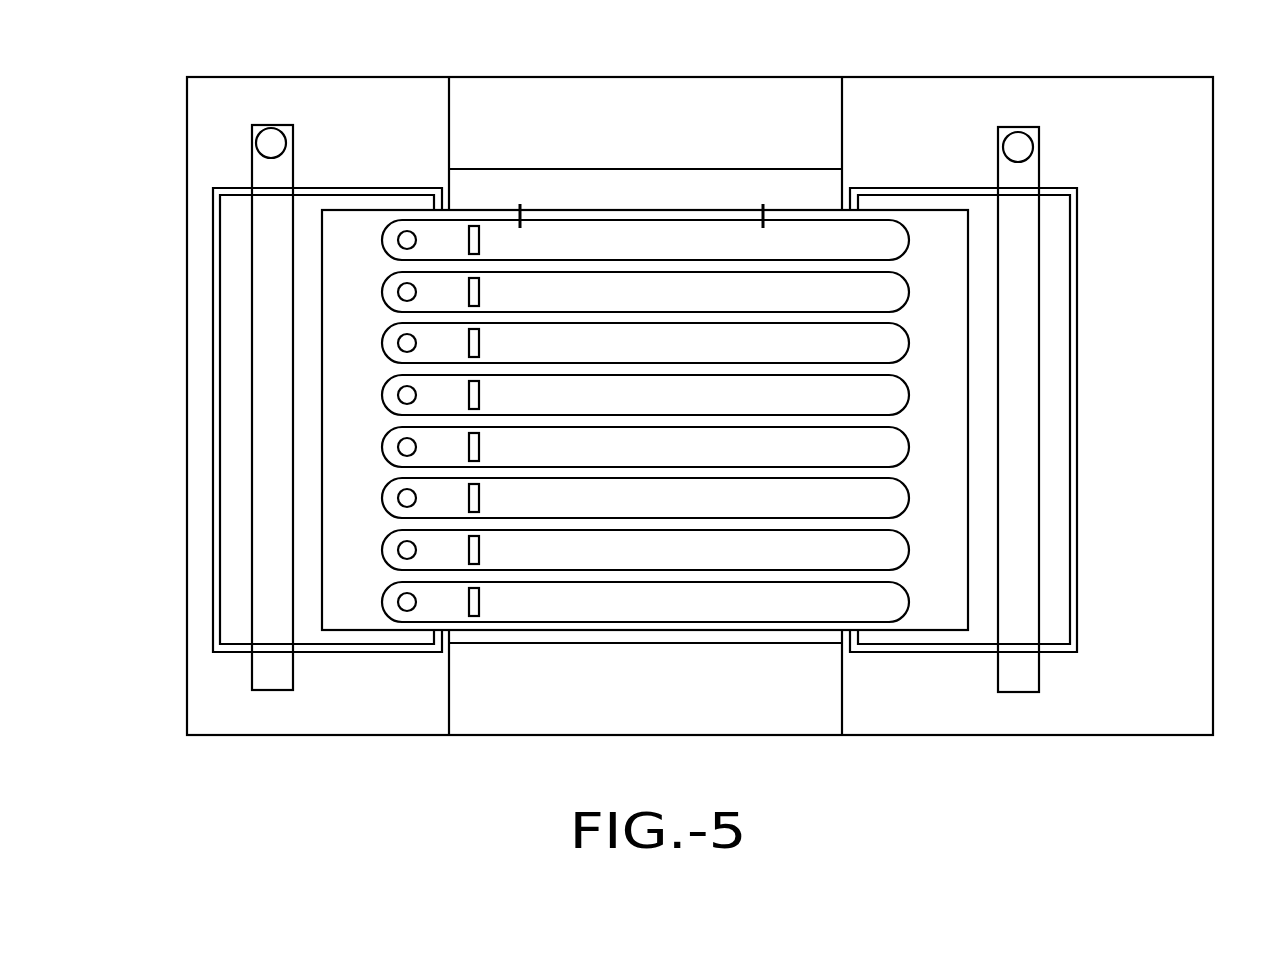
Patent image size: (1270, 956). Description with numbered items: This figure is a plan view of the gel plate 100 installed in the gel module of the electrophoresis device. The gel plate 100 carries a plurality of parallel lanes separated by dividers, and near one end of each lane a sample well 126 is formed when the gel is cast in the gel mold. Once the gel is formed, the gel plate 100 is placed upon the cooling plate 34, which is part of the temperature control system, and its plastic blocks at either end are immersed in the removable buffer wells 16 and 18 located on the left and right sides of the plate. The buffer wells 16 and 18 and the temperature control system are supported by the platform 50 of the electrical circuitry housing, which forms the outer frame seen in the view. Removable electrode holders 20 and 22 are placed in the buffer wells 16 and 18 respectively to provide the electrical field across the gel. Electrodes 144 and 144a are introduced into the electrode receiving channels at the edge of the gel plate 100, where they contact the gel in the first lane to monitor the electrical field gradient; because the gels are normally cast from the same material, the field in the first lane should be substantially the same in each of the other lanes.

The platform 50 is at (1156, 473).
The cooling plate 34 is at (623, 640).
The electrode holder 20 is at (273, 187).
The electrode holder 22 is at (1017, 199).
The buffer well 16 is at (375, 650).
The buffer well 18 is at (952, 655).
The gel plate 100 is at (645, 325).
The sample well 126 is at (468, 242).
The electrode 144 is at (520, 210).
The electrode 144a is at (763, 210).